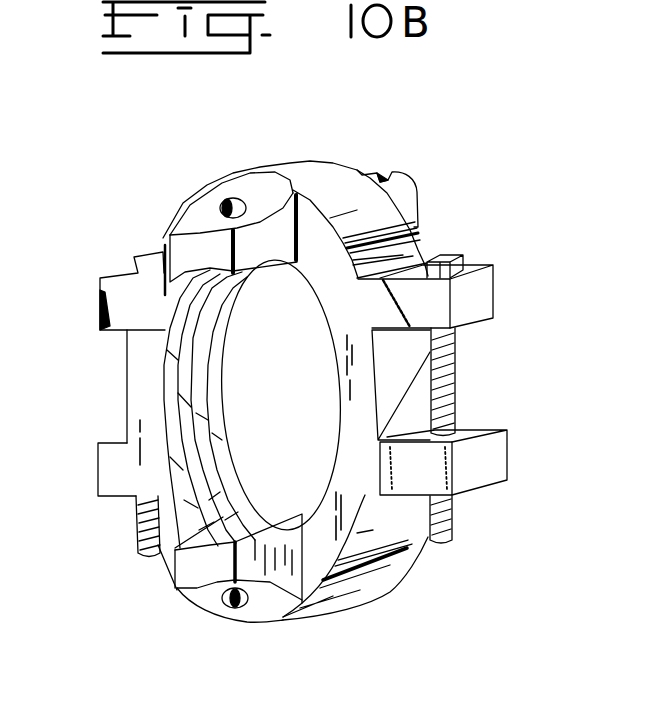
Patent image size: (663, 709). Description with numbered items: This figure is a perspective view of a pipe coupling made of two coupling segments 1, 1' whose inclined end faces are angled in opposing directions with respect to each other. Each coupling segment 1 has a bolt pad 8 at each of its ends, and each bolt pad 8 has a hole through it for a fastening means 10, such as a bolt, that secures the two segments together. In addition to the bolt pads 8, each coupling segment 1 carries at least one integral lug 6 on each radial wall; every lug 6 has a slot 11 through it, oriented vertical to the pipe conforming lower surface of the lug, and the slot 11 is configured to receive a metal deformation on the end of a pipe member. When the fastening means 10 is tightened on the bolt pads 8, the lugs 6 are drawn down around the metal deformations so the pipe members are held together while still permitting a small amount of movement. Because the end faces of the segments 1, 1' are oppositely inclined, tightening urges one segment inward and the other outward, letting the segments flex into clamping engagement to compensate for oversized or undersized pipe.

The coupling segment 1 is at (293, 469).
The coupling segment 1' is at (295, 244).
The integral lug 6 is at (183, 248).
The bolt pad 8 is at (480, 297).
The fastening means 10 is at (457, 367).
The slot 11 is at (231, 199).